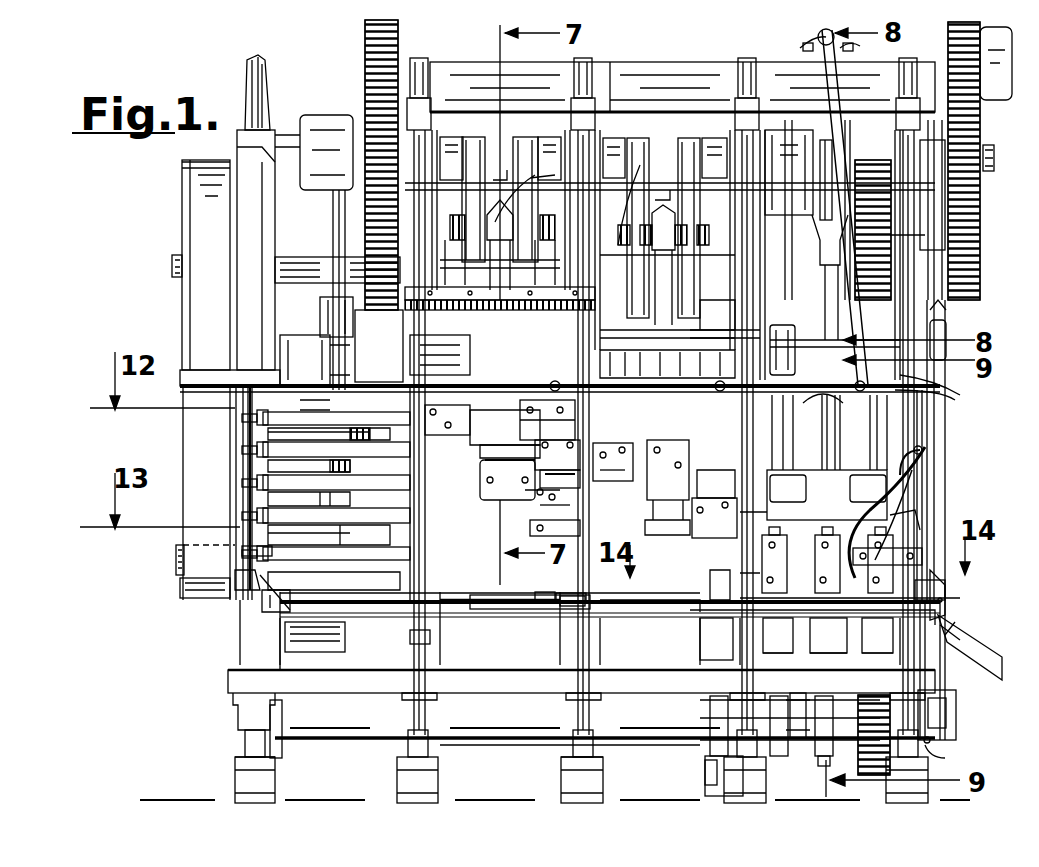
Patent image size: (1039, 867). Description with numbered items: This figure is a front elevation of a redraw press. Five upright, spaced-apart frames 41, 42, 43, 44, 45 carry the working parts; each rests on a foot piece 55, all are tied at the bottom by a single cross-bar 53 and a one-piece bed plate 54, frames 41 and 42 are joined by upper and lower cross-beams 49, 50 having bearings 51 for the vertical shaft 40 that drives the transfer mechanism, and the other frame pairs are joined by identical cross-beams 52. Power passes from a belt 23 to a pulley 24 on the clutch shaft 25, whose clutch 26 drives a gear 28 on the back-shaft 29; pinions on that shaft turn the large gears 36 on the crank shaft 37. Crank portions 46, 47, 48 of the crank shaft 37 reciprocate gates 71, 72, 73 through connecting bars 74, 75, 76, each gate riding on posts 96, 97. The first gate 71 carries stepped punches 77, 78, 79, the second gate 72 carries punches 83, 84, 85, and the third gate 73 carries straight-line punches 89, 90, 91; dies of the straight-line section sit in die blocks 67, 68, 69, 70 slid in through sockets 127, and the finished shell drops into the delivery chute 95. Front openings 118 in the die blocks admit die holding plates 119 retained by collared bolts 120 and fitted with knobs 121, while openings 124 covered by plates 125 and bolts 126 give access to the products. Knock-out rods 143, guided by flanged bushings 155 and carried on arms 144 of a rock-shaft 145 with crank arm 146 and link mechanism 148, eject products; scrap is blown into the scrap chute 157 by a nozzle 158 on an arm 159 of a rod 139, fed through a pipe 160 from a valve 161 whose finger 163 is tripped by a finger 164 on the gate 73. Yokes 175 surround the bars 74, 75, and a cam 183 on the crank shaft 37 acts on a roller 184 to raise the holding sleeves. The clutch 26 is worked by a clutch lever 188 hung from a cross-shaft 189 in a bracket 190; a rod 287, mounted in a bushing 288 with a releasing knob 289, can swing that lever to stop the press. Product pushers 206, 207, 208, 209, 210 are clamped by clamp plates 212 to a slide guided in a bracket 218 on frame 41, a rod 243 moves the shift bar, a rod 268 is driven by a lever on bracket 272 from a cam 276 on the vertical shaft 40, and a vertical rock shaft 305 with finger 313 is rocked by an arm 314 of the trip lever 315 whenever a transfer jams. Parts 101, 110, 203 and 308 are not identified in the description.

The belt or chain 23 is at (195, 230).
The pulley 24 is at (185, 185).
The clutch shaft 25 is at (172, 278).
The clutch 26 is at (812, 332).
The gear 28 is at (885, 193).
The back-shaft 29 is at (870, 262).
The large gears 36 is at (365, 48).
The crank shaft 37 is at (993, 160).
The vertical shaft 40 is at (335, 217).
The frame 41 is at (248, 96).
The frame 42 is at (420, 60).
The frame 43 is at (586, 60).
The frame 44 is at (745, 58).
The frame 45 is at (912, 66).
The left-hand crank portion 46 is at (515, 165).
The second crank portion 47 is at (695, 205).
The third crank portion 48 is at (830, 160).
The upper horizontal cross-beam 49 is at (292, 305).
The lower horizontal cross-beam 50 is at (306, 690).
The bearings 51 is at (325, 312).
The cross-beams 52 is at (528, 80).
The cross-bar 53 is at (318, 738).
The bed plate 54 is at (488, 680).
The foot piece 55 is at (265, 787).
The die block 67 is at (700, 650).
The die block 68 is at (770, 645).
The die block 69 is at (835, 645).
The die block 70 is at (890, 645).
The first gate 71 is at (420, 357).
The second gate 72 is at (575, 526).
The third gate 73 is at (880, 470).
The connecting bar 74 is at (410, 300).
The connecting bar 75 is at (725, 318).
The connecting bar 76 is at (830, 420).
The punch 77 is at (445, 425).
The punch 78 is at (500, 450).
The punch 79 is at (535, 470).
The punch 83 is at (608, 500).
The punch 84 is at (655, 540).
The punch 85 is at (706, 612).
The punch 89 is at (766, 622).
The punch 90 is at (816, 622).
The cut-off punch 91 is at (888, 622).
The delivery chute 95 is at (876, 700).
The vertical rod or post 96 is at (776, 484).
The vertical rod or post 97 is at (856, 484).
The valve 101 is at (738, 512).
The cylinder 110 is at (775, 562).
The front openings 118 is at (520, 455).
The die holding plate 119 is at (530, 465).
The collared bolts 120 is at (535, 495).
The handle or knob 121 is at (545, 500).
The opening 124 is at (535, 530).
The removable plate 125 is at (528, 575).
The bolts 126 is at (564, 570).
The sockets 127 is at (698, 630).
The supporting rods 139 is at (910, 215).
The knock-out rods 143 is at (712, 708).
The arm 144 is at (822, 768).
The rock-shaft 145 is at (958, 722).
The crank arm 146 is at (945, 758).
The link mechanism 148 is at (945, 690).
The flanged bushings 155 is at (820, 695).
The scrap chute 157 is at (970, 628).
The nozzle 158 is at (948, 585).
The arm 159 is at (915, 550).
The tube or pipe 160 is at (930, 473).
The valve 161 is at (925, 455).
The actuating finger 163 is at (920, 450).
The finger 164 is at (925, 515).
The yoke 175 is at (462, 200).
The cam 183 is at (495, 240).
The roller 184 is at (760, 128).
The clutch lever 188 is at (950, 308).
The cross-shaft 189 is at (856, 44).
The bracket 190 is at (810, 47).
The block 203 is at (335, 346).
The product pusher 206 is at (322, 405).
The product pusher 207 is at (350, 447).
The product pusher 208 is at (350, 480).
The product pusher 209 is at (392, 508).
The product pusher 210 is at (384, 562).
The clamp plates 212 is at (242, 490).
The bracket 218 is at (245, 596).
The elongated rod 243 is at (470, 615).
The rod 268 is at (566, 612).
The bracket 272 is at (285, 633).
The cam 276 is at (412, 646).
The elongated rod 287 is at (323, 366).
The bushing 288 is at (945, 382).
The releasing knob 289 is at (960, 398).
The vertical rock shaft 305 is at (245, 440).
The collar 308 is at (242, 424).
The finger 313 is at (242, 551).
The arm 314 is at (180, 585).
The trip lever 315 is at (268, 600).